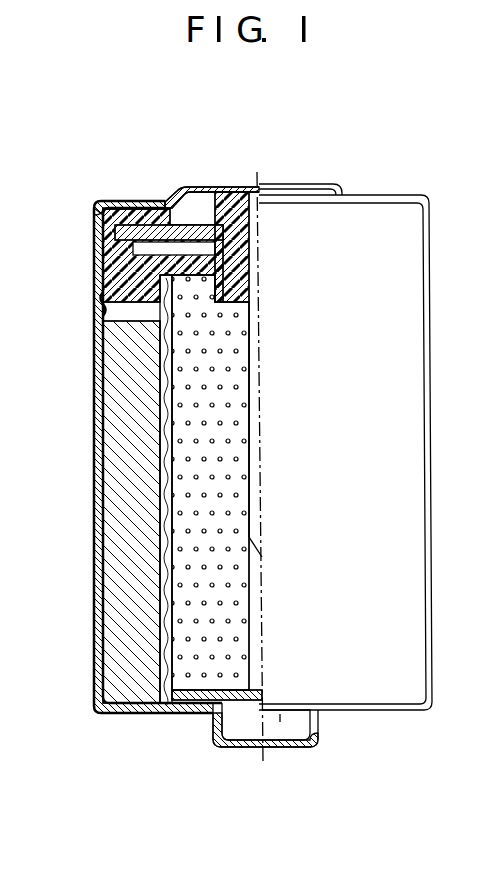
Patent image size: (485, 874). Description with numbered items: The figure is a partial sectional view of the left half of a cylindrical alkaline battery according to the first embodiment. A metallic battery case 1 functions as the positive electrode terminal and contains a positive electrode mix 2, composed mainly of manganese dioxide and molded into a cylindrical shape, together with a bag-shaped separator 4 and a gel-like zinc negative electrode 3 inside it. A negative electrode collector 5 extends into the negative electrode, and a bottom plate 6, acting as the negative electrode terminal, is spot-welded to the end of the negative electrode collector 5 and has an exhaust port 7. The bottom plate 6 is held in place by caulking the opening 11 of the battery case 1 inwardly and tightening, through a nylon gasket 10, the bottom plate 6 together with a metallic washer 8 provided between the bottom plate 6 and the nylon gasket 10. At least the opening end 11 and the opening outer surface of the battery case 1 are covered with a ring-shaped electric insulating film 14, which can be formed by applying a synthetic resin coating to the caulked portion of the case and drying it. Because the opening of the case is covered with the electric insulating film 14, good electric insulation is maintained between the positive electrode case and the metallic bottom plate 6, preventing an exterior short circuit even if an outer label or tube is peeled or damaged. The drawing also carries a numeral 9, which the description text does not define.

The battery case 1 is at (176, 707).
The positive electrode mix 2 is at (122, 692).
The gel-like zinc negative electrode 3 is at (183, 653).
The bag-shaped separator 4 is at (167, 603).
The negative electrode collector 5 is at (252, 203).
The bottom plate 6 is at (213, 188).
The exhaust port 7 is at (174, 197).
The metallic washer 8 is at (142, 231).
The collector plate 9 is at (166, 224).
The nylon gasket 10 is at (118, 257).
The opening 11 is at (108, 203).
The electric insulating film 14 is at (120, 203).